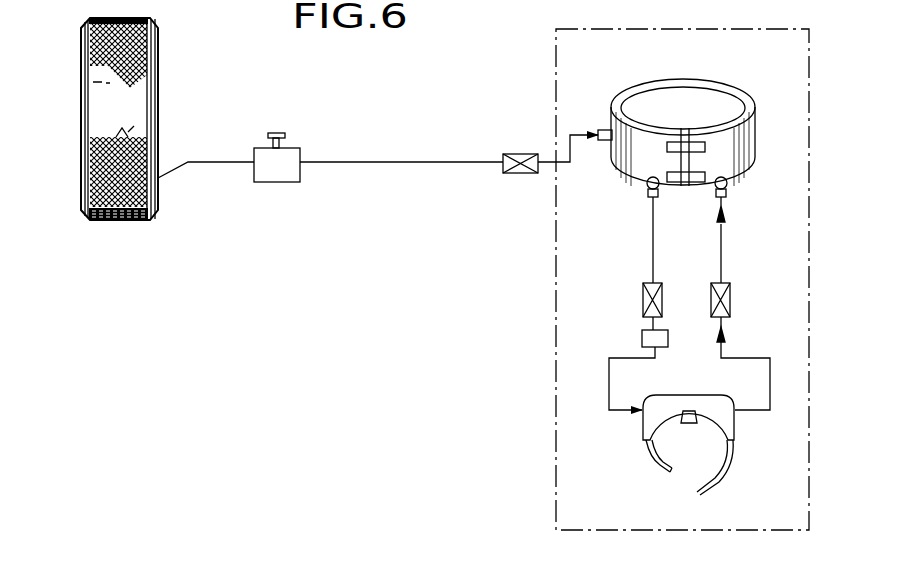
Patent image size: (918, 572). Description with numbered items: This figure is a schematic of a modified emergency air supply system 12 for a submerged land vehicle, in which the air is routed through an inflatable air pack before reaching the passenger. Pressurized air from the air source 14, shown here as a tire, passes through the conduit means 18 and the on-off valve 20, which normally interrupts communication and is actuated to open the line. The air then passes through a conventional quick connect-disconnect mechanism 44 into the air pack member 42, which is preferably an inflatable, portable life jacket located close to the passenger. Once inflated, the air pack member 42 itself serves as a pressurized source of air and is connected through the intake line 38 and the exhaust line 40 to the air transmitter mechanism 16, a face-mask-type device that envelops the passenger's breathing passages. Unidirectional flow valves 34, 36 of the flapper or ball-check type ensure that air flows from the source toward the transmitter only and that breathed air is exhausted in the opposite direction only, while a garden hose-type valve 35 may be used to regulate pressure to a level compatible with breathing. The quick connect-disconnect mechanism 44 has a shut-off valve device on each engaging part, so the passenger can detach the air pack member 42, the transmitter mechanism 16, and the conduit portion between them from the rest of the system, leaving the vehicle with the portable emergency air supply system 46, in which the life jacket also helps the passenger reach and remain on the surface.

The emergency air supply system 12 is at (278, 125).
The air source 14 is at (161, 68).
The air transmitter mechanism 16 is at (650, 427).
The conduit means 18 is at (197, 161).
The on-off valve 20 is at (280, 170).
The unidirectional flow valve 34 is at (645, 303).
The garden hose-type valve 35 is at (642, 337).
The unidirectional flow valve 36 is at (728, 297).
The intake line 38 is at (608, 388).
The exhaust line 40 is at (773, 372).
The air pack member 42 is at (777, 68).
The quick connect-disconnect mechanism 44 is at (522, 113).
The portable emergency air supply system 46 is at (554, 303).